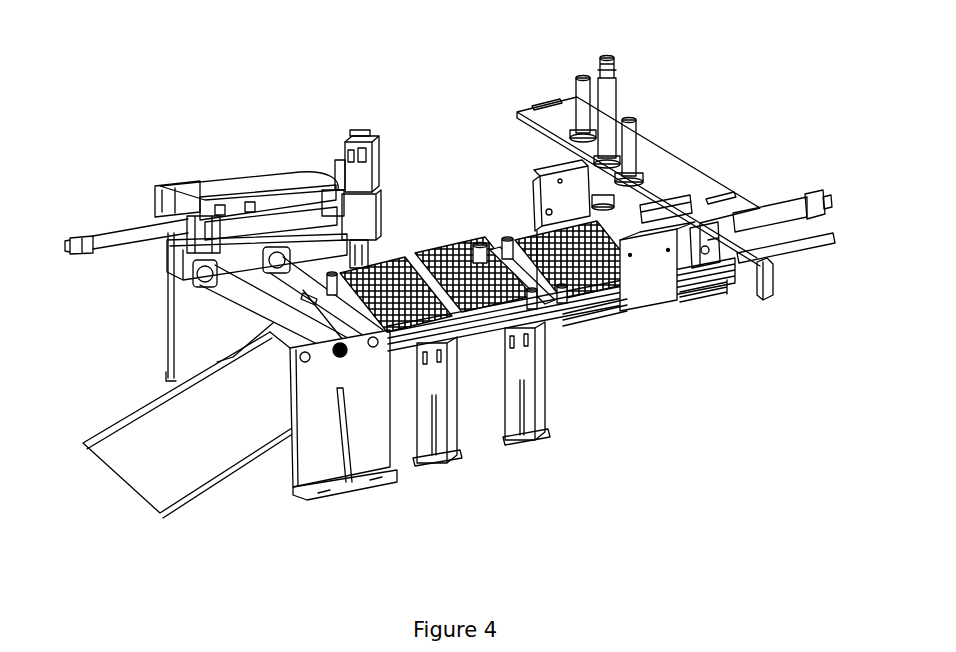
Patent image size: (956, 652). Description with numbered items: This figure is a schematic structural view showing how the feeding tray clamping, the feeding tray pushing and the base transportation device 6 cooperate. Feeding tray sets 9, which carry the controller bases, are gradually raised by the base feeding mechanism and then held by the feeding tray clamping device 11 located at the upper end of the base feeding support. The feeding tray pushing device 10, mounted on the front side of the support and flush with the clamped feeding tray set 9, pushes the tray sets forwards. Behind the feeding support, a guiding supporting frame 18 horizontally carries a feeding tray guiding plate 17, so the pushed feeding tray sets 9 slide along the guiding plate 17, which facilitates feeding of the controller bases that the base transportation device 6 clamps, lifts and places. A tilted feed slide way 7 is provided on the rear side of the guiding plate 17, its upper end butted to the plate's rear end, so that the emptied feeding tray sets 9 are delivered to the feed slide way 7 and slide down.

The base transportation device 6 is at (248, 190).
The feed slide way 7 is at (235, 417).
The feeding tray sets 9 is at (597, 313).
The feeding tray pushing device 10 is at (714, 242).
The feeding tray clamping device 11 is at (610, 150).
The feeding tray guiding plate 17 is at (557, 320).
The guiding supporting frame 18 is at (437, 388).